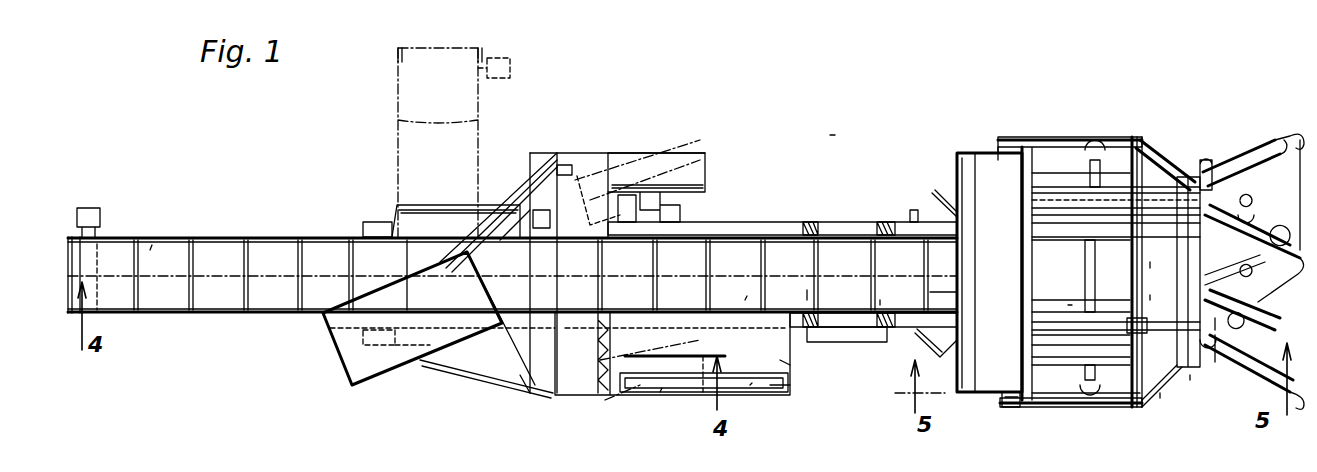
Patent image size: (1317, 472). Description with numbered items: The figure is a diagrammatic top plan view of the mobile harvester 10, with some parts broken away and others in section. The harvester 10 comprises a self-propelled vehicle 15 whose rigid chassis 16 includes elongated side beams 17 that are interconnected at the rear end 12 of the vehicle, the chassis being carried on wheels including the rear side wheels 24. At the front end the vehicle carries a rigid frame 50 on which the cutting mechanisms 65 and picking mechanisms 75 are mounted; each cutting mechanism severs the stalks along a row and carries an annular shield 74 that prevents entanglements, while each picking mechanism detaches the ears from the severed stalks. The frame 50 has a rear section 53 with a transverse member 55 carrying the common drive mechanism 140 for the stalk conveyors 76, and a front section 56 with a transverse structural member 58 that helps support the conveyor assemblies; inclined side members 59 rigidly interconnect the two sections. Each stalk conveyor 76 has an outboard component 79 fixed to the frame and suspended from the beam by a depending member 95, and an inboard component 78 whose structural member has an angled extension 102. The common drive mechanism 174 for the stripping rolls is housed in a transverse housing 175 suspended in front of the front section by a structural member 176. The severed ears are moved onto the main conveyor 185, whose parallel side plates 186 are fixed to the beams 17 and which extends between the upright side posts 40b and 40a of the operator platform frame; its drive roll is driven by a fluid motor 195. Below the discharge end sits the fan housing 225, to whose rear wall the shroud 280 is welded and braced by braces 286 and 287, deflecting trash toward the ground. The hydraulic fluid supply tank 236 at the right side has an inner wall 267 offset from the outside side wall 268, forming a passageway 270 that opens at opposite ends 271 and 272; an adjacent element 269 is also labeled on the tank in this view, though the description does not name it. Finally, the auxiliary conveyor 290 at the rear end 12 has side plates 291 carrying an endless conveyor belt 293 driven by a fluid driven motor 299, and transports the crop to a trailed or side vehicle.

The mobile harvester 10 is at (834, 127).
The rear end 12 is at (372, 222).
The self-propelled vehicle 15 is at (775, 222).
The rigid chassis 16 is at (728, 222).
The side beams 17 is at (822, 222).
The rear side wheels 24 is at (701, 160).
The front side post 40a is at (882, 301).
The rear side post 40b is at (804, 294).
The rigid frame 50 is at (1076, 407).
The rear section 53 is at (1002, 410).
The transverse member 55 is at (998, 138).
The front section 56 is at (1146, 274).
The transverse structural member 58 is at (1142, 140).
The inclined side members 59 is at (1056, 137).
The cutting mechanism 65 is at (1215, 262).
The annular shield 74 is at (1258, 190).
The picking mechanism 75 is at (1018, 207).
The stalk conveyor 76 is at (1066, 246).
The inboard component 78 is at (1258, 226).
The outboard component 79 is at (1250, 352).
The depending member 95 is at (1122, 368).
The angled extension 102 is at (1242, 325).
The drive mechanism 140 is at (930, 292).
The drive mechanism 174 is at (1156, 294).
The housing 175 is at (1300, 393).
The structural member 176 is at (1158, 394).
The main conveyor 185 is at (852, 240).
The side plates 186 is at (750, 278).
The fluid motor 195 is at (528, 240).
The fan housing 225 is at (560, 153).
The hydraulic fluid supply tank 236 is at (735, 395).
The inner wall 267 is at (787, 367).
The outside side wall 268 is at (668, 392).
The tray 269 is at (750, 385).
The passageway 270 is at (765, 360).
The end 271 is at (790, 384).
The end 272 is at (612, 400).
The shroud 280 is at (345, 240).
The brace 286 is at (500, 376).
The brace 287 is at (548, 394).
The auxiliary conveyor 290 is at (212, 237).
The side plates 291 is at (268, 237).
The conveyor belt 293 is at (152, 250).
The fluid driven motor 299 is at (96, 208).